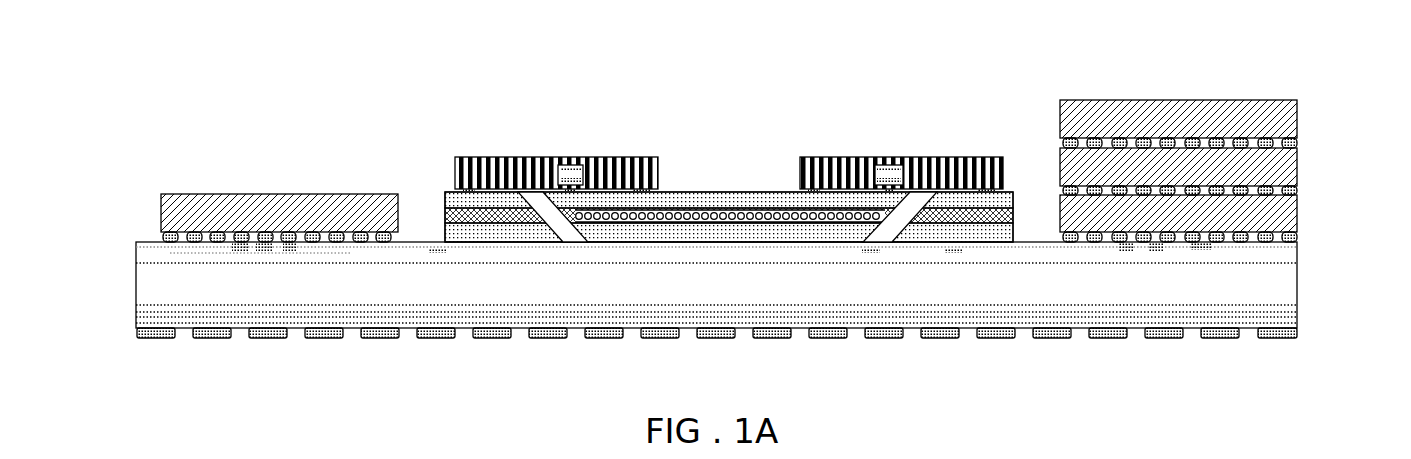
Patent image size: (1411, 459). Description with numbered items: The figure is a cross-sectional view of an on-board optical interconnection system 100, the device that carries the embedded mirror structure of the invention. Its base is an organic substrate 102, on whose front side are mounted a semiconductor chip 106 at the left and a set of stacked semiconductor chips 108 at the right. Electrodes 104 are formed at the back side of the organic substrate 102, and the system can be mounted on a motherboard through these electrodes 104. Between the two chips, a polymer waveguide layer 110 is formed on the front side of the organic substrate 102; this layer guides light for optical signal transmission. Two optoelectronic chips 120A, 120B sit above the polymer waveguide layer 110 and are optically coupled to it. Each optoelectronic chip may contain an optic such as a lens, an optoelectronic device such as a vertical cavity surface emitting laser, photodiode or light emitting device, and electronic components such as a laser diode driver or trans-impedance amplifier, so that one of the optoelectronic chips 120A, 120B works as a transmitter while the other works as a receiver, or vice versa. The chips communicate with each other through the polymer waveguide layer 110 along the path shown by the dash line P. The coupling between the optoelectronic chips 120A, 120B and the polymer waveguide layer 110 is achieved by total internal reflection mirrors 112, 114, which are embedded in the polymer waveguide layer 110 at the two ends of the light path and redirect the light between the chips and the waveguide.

The on-board optical interconnection system 100 is at (100, 124).
The organic substrate 102 is at (1297, 293).
The electrodes 104 is at (1218, 339).
The semiconductor chip 106 is at (285, 194).
The stacked semiconductor chips 108 is at (1190, 100).
The polymer waveguide layer 110 is at (729, 260).
The TIR mirror 112 is at (572, 221).
The TIR mirror 114 is at (887, 221).
The dash line P is at (765, 222).
The optoelectronic chip 120A is at (587, 157).
The optoelectronic chip 120B is at (912, 157).